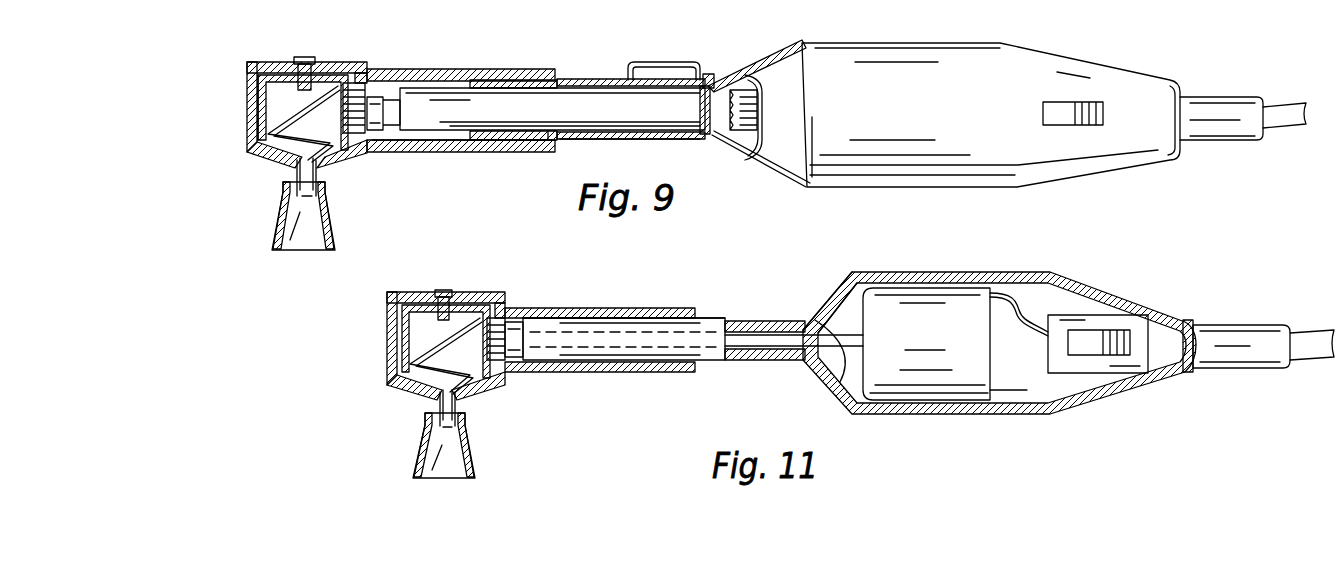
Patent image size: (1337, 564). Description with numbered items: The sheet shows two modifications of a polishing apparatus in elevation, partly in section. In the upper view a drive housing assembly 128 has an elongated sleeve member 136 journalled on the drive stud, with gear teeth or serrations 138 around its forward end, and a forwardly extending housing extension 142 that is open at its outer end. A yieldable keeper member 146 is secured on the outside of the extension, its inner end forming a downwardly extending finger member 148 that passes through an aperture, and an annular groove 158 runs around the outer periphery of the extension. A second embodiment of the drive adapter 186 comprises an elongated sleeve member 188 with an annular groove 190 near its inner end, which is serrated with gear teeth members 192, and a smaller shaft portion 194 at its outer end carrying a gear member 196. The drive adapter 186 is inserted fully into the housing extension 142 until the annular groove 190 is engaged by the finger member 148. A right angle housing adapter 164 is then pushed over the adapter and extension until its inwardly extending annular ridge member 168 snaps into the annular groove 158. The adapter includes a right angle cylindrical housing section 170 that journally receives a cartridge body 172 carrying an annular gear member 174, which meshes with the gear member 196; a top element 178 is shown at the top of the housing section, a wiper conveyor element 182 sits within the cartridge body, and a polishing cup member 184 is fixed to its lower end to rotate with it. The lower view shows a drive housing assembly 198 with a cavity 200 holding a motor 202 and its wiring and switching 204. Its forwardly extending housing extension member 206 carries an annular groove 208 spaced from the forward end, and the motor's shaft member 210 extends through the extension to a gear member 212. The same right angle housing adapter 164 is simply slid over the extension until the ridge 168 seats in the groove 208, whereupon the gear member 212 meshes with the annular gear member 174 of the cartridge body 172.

In FIG. 9, the drive housing assembly 128 is at (765, 48).
In FIG. 9, the elongated sleeve member 136 is at (766, 74).
In FIG. 9, the gear teeth or serrations 138 is at (712, 105).
In FIG. 9, the housing extension 142 is at (603, 81).
In FIG. 9, the yieldable keeper member 146 is at (672, 70).
In FIG. 9, the finger member 148 is at (708, 85).
In FIG. 9, the annular groove 158 is at (545, 141).
In FIG. 9, the right angle housing adapter 164 is at (403, 58).
In FIG. 11, the right angle housing adapter 164 is at (421, 287).
In FIG. 9, the annular ridge member 168 is at (540, 87).
In FIG. 11, the annular ridge member 168 is at (677, 322).
In FIG. 9, the right angle cylindrical housing section 170 is at (258, 84).
In FIG. 9, the cartridge body 172 is at (263, 90).
In FIG. 11, the cartridge body 172 is at (405, 330).
In FIG. 9, the annular gear member 174 is at (263, 134).
In FIG. 11, the annular gear member 174 is at (398, 358).
In FIG. 9, the retaining screw 178 is at (305, 58).
In FIG. 11, the retaining screw 178 is at (443, 290).
In FIG. 9, the wiper conveyor element 182 is at (262, 157).
In FIG. 11, the wiper conveyor element 182 is at (402, 390).
In FIG. 9, the polishing cup member 184 is at (283, 210).
In FIG. 11, the polishing cup member 184 is at (420, 438).
In FIG. 9, the drive adapter 186 is at (443, 140).
In FIG. 9, the elongated sleeve member 188 is at (585, 139).
In FIG. 9, the annular groove 190 is at (706, 136).
In FIG. 9, the gear teeth members or serrations 192 is at (737, 110).
In FIG. 9, the smaller shaft portion 194 is at (388, 122).
In FIG. 9, the gear member 196 is at (352, 67).
In FIG. 11, the drive housing assembly 198 is at (843, 264).
In FIG. 11, the cavity 200 is at (820, 322).
In FIG. 11, the motor 202 is at (932, 302).
In FIG. 11, the wiring and switching 204 is at (1102, 324).
In FIG. 11, the housing extension member 206 is at (716, 361).
In FIG. 11, the annular groove 208 is at (682, 364).
In FIG. 11, the shaft member 210 is at (842, 384).
In FIG. 11, the gear member 212 is at (488, 308).